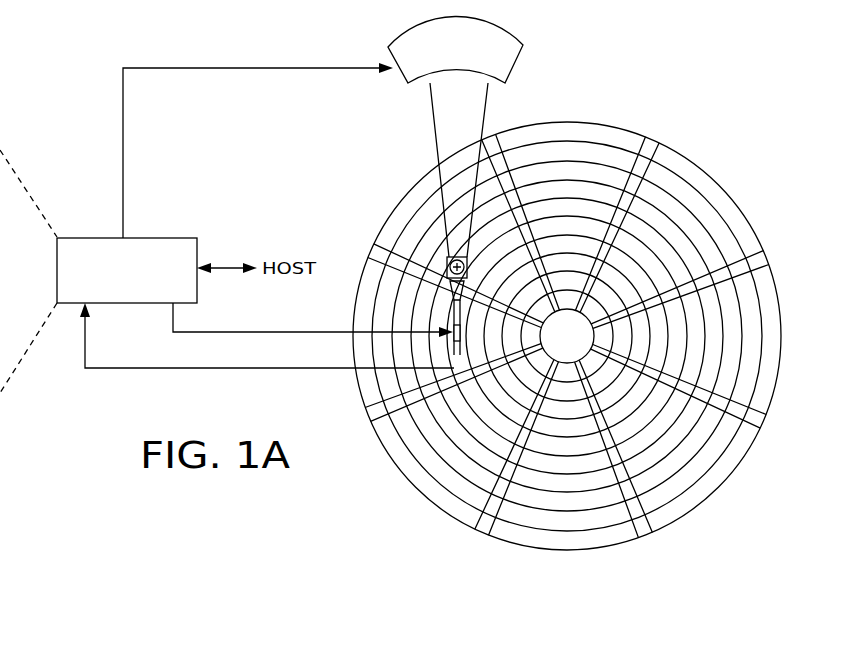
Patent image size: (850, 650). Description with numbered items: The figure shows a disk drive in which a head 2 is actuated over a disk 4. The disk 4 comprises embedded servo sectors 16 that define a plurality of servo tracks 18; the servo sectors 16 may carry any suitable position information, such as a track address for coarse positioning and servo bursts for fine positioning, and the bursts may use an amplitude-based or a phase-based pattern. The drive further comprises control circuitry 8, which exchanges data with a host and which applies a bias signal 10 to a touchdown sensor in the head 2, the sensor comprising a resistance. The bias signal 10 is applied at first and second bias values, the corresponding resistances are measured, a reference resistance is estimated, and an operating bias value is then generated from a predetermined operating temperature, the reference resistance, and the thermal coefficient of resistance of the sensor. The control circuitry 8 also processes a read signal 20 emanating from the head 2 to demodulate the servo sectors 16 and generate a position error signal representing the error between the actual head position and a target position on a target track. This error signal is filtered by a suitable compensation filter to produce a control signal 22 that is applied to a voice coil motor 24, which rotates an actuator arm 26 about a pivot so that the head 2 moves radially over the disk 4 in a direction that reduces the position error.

The head 2 is at (440, 344).
The disk 4 is at (567, 314).
The control circuitry 8 is at (165, 238).
The bias signal 10 is at (309, 332).
The servo sectors 16 is at (579, 344).
The servo tracks 18 is at (567, 153).
The read signal 20 is at (253, 370).
The control signal 22 is at (123, 138).
The voice coil motor 24 is at (408, 82).
The actuator arm 26 is at (440, 152).